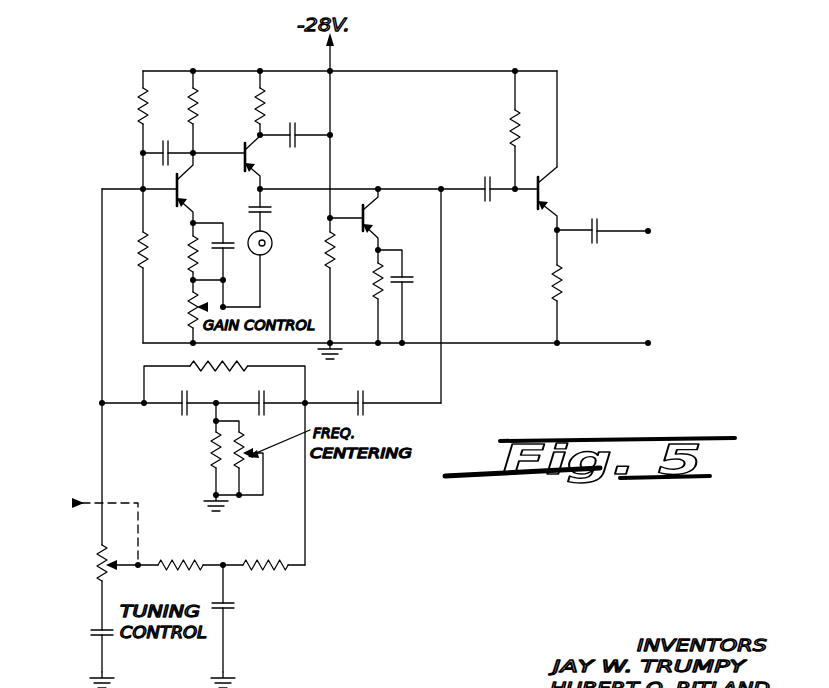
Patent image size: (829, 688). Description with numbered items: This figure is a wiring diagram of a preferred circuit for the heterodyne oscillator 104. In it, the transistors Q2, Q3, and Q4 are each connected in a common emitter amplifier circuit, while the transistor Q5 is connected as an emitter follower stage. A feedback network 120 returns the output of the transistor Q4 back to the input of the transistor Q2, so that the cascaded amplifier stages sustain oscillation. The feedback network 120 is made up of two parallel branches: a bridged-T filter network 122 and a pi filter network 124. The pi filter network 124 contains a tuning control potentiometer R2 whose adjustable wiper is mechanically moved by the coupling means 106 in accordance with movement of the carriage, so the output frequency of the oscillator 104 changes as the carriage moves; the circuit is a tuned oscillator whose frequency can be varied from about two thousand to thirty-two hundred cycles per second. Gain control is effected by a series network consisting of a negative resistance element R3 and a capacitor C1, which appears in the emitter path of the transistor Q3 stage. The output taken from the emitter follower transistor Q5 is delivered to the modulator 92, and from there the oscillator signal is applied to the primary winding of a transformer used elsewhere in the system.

The oscillator 104 is at (617, 208).
The modulator 92 is at (684, 287).
The bridged-T filter network 122 is at (203, 421).
The feedback network 120 is at (234, 541).
The coupling means 106 is at (75, 557).
The pi filter network 124 is at (254, 623).
The transistor Q2 is at (162, 147).
The transistor Q3 is at (265, 130).
The transistor Q4 is at (367, 219).
The transistor Q5 is at (560, 198).
The capacitor C1 is at (277, 210).
The negative resistance element R3 is at (273, 269).
The tuning control potentiometer R2 is at (107, 557).